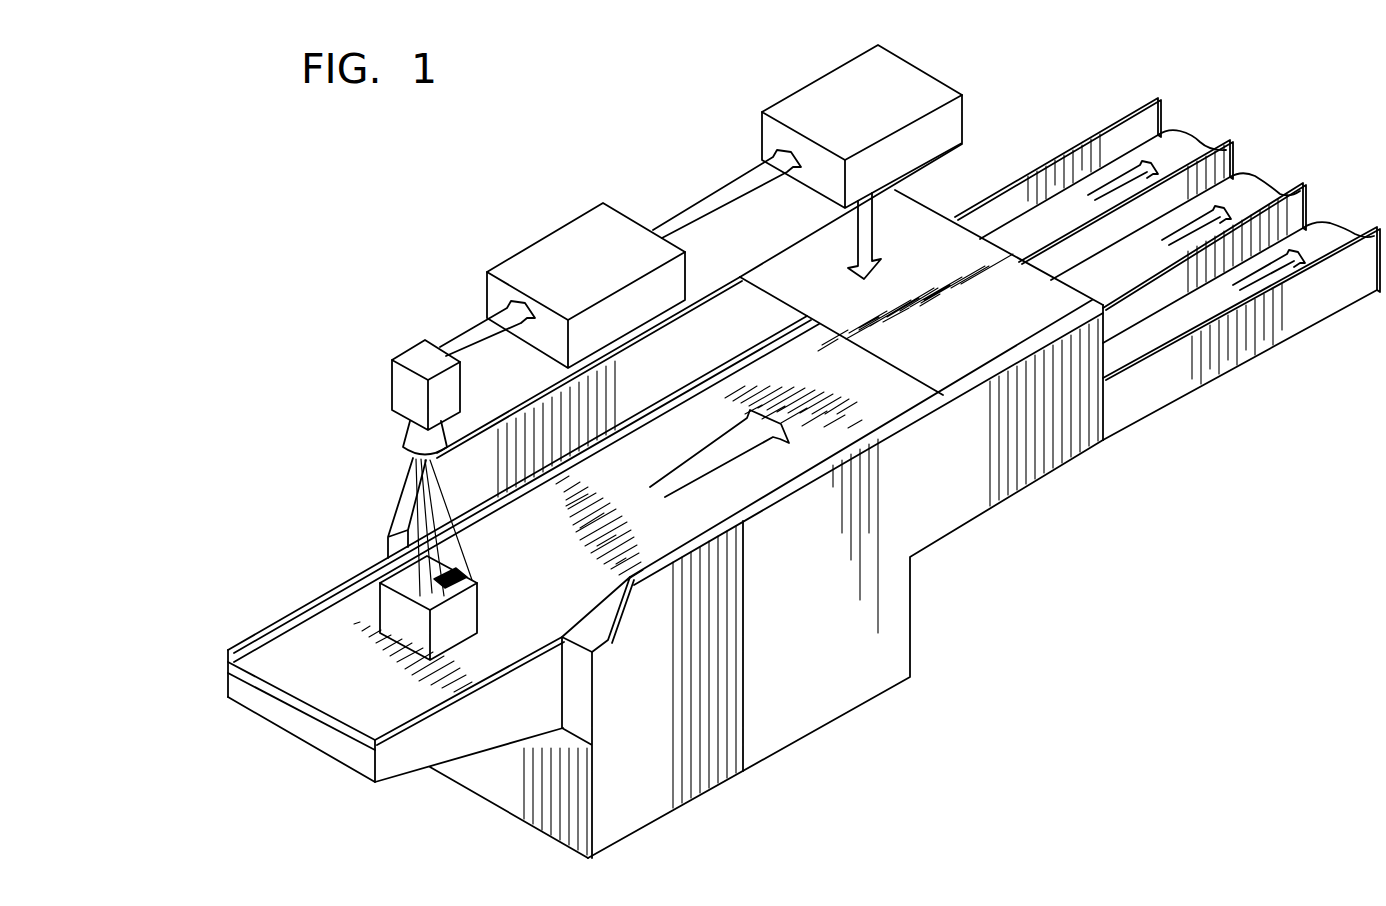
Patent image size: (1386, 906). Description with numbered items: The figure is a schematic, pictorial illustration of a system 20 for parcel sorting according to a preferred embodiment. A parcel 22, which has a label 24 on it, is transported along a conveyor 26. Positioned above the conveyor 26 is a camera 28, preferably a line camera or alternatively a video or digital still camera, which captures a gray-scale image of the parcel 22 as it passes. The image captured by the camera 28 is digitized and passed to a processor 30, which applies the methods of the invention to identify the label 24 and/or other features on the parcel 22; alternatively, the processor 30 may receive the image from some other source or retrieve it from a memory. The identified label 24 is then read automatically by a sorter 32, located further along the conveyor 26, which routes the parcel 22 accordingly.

The system for parcel sorting 20 is at (159, 181).
The parcel 22 is at (400, 630).
The label 24 is at (458, 575).
The conveyor 26 is at (292, 638).
The camera 28 is at (398, 386).
The processor 30 is at (518, 258).
The sorter 32 is at (780, 110).